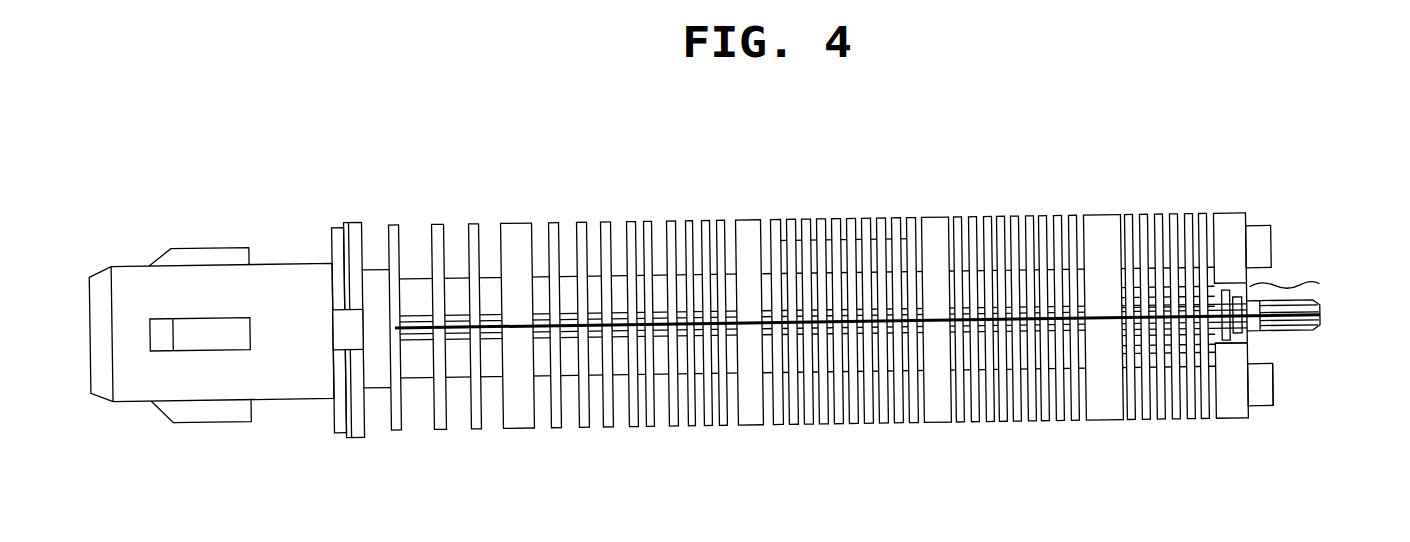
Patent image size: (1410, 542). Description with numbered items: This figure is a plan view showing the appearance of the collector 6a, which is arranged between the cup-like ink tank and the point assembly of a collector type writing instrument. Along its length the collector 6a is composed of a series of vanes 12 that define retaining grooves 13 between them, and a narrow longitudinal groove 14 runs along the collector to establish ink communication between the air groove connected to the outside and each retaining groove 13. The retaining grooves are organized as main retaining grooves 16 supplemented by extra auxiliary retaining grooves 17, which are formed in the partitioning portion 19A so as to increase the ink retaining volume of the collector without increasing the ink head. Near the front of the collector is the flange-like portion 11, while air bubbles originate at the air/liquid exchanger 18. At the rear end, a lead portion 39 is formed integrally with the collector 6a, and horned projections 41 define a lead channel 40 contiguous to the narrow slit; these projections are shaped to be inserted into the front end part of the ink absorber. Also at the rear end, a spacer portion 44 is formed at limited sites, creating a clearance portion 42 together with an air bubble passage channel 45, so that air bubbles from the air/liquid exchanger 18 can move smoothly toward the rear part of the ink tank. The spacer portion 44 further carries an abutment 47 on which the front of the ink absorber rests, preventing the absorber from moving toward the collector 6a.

The collector 6a is at (288, 378).
The flange 11 is at (352, 322).
The vanes 12 is at (650, 228).
The retaining grooves 13 is at (678, 228).
The narrow longitudinal groove 14 is at (537, 324).
The main retaining grooves 16 is at (392, 441).
The auxiliary retaining grooves 17 is at (1130, 454).
The air/liquid exchanger 18 is at (1107, 327).
The partitioning portion 19A is at (1213, 222).
The lead portion 39 is at (1318, 313).
The lead channel 40 is at (1318, 330).
The horned projections 41 is at (1293, 292).
The clearance portion 42 is at (1308, 384).
The air bubble passage channel 45 is at (1257, 355).
The spacer portion 44 is at (1262, 255).
The abutment 47 is at (1272, 390).